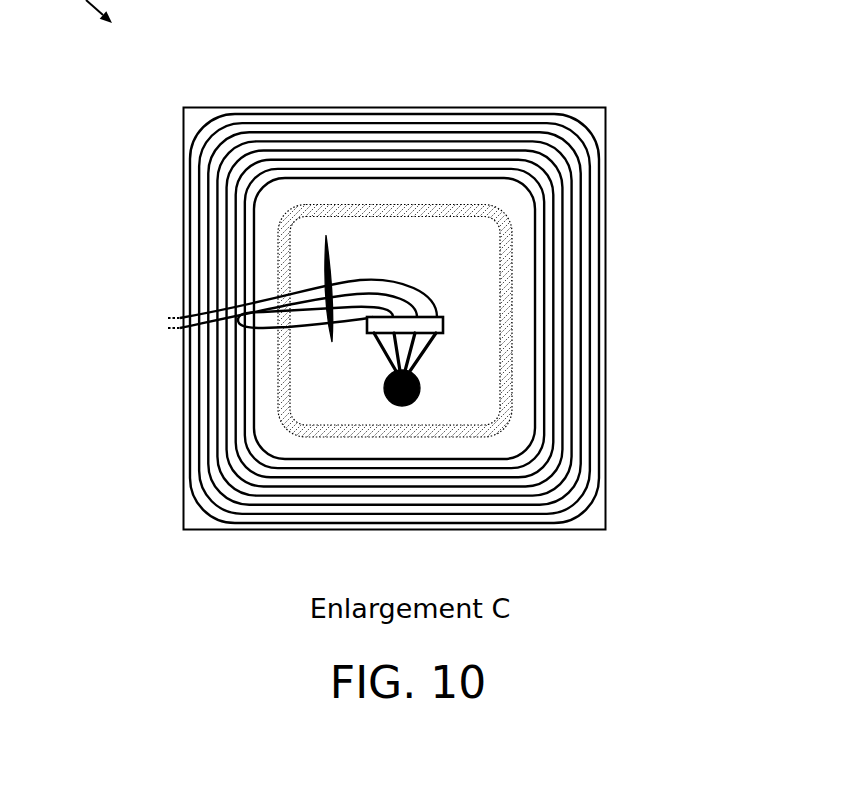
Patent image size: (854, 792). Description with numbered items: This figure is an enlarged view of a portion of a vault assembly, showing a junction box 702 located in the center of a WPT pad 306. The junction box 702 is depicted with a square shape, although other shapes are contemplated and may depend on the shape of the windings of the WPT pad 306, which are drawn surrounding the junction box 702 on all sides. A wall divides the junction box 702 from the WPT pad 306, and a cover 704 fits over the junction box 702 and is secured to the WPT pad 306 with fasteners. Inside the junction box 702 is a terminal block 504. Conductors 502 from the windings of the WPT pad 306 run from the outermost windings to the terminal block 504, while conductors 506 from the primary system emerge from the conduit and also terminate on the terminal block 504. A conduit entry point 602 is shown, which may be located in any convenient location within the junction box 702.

The WPT pad 306 is at (604, 318).
The conductors 502 is at (326, 236).
The terminal block 504 is at (367, 323).
The conductors 506 is at (353, 352).
The conduit entry point 602 is at (385, 388).
The junction box 702 is at (274, 262).
The cover 704 is at (262, 215).